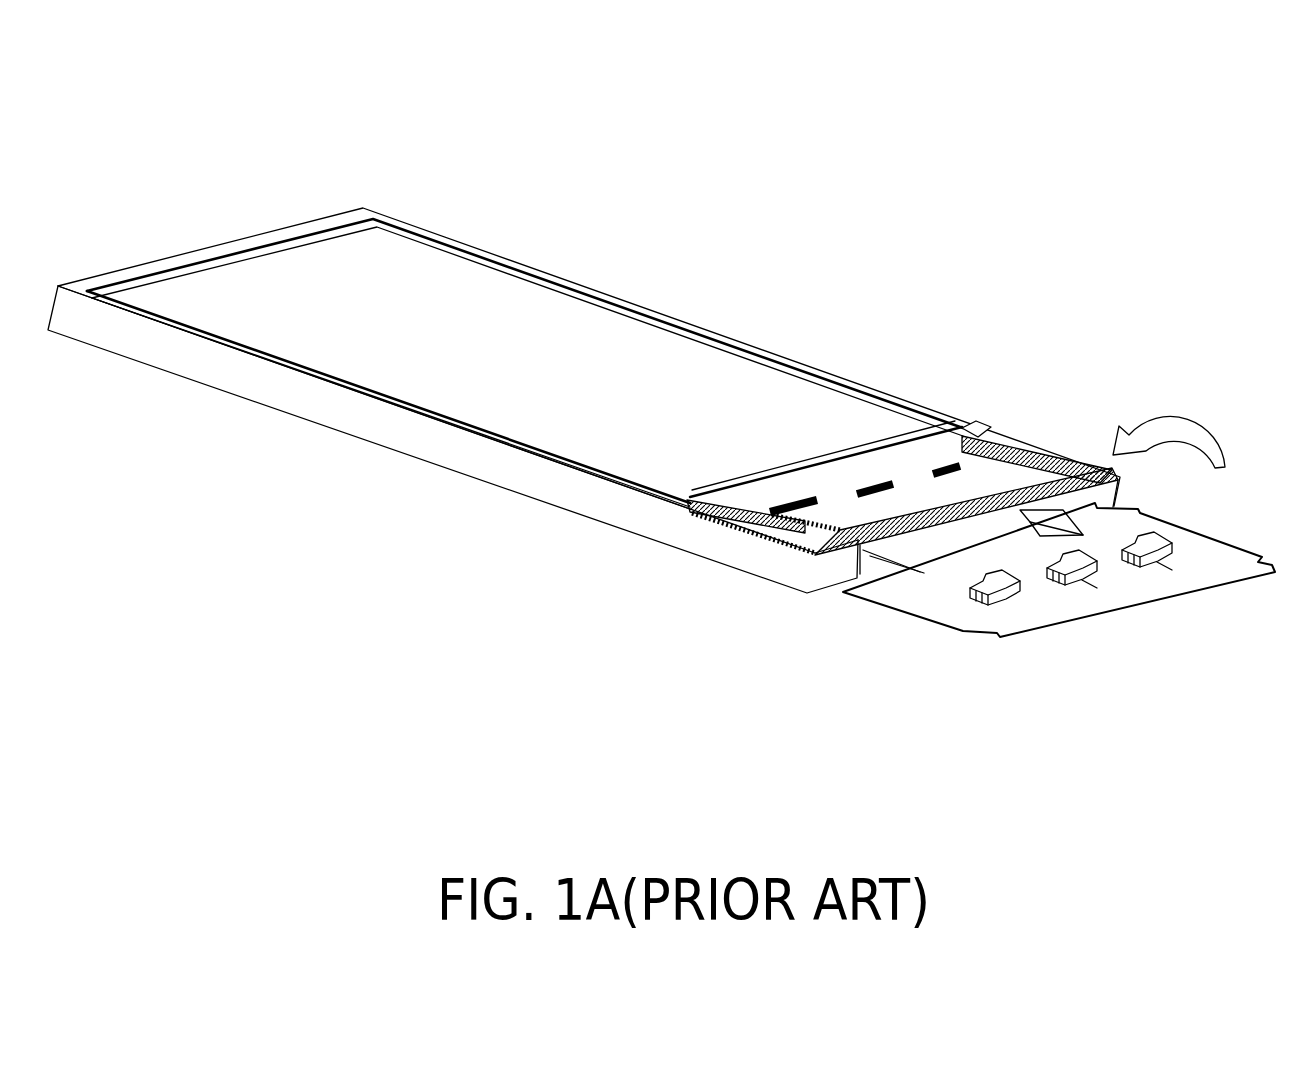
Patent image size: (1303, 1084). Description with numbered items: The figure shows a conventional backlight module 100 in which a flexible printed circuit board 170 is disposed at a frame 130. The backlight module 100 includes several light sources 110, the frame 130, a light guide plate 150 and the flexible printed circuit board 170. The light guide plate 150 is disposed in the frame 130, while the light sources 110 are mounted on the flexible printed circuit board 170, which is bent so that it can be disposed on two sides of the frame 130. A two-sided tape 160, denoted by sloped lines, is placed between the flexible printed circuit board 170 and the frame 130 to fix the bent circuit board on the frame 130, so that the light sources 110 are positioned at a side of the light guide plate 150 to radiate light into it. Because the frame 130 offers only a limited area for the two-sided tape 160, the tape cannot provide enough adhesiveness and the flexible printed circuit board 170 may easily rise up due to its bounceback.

The backlight module 100 is at (1302, 79).
The light sources 110 is at (1150, 580).
The frame 130 is at (687, 522).
The light guide plate 150 is at (910, 478).
The two-sided tape 160 is at (1003, 443).
The flexible printed circuit board 170 is at (900, 592).